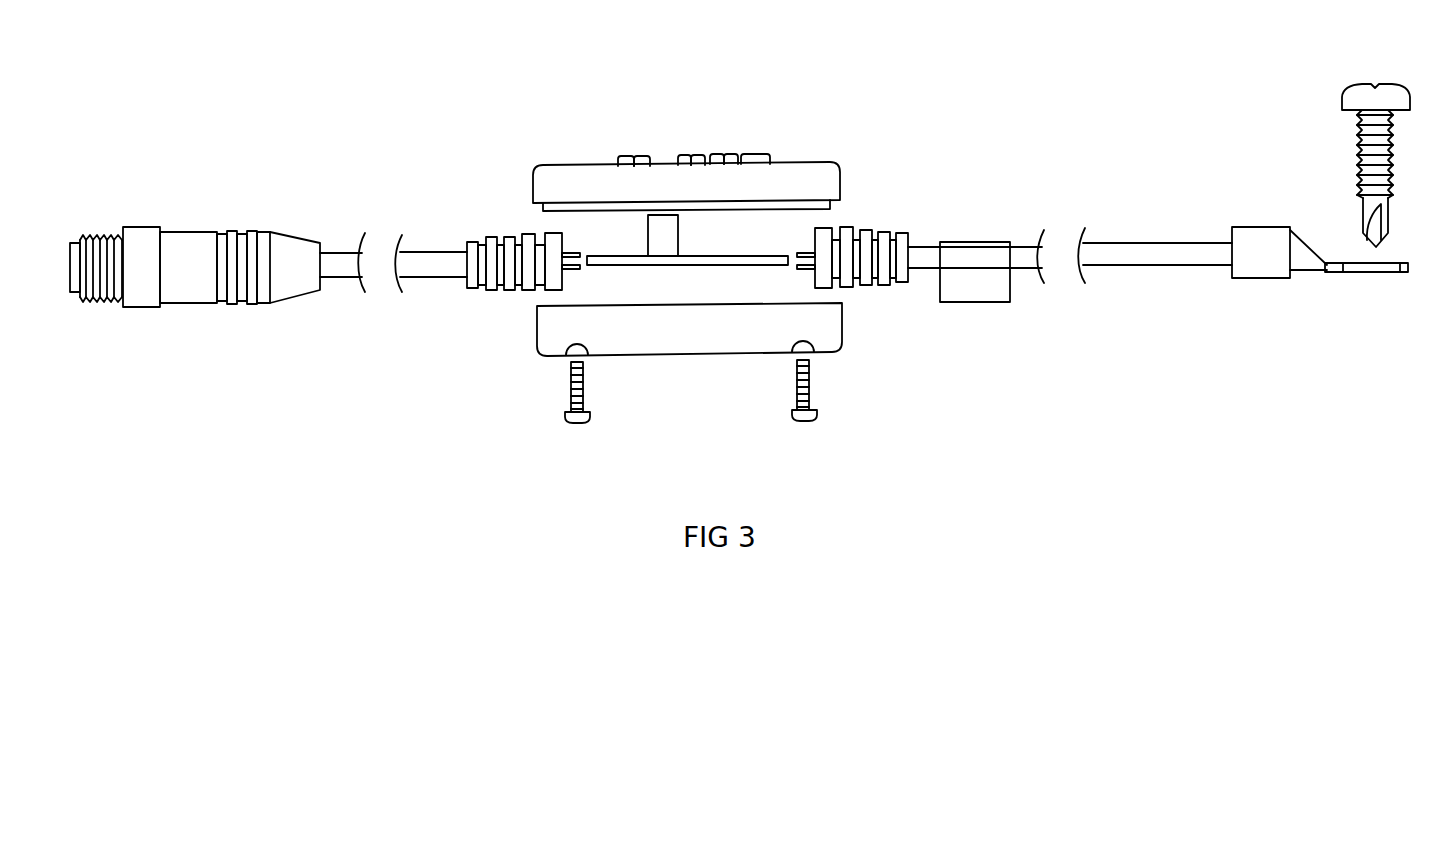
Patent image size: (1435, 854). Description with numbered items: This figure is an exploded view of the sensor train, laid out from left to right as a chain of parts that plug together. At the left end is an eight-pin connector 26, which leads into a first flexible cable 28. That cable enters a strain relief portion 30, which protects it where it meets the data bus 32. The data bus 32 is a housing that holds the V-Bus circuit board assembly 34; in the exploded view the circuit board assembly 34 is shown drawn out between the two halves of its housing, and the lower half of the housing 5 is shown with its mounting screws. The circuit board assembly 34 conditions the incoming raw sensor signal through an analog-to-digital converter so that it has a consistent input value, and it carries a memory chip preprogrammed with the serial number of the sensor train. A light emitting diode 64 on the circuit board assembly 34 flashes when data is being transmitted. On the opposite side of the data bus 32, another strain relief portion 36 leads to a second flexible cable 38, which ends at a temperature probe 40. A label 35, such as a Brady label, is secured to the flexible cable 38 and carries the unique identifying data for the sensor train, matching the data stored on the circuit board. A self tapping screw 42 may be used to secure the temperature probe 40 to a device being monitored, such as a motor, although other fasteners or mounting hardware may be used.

The base housing 5 is at (535, 330).
The 8 pin connector 26 is at (188, 305).
The first flexible cable 28 is at (427, 277).
The strain relief portion 30 is at (490, 238).
The data Bus 32 is at (675, 100).
The V-Bus circuit board assembly 34 is at (780, 253).
The label 35 is at (975, 302).
The strain relief portion 36 is at (882, 232).
The second flexible cable 38 is at (1157, 242).
The temperature probe 40 is at (1310, 270).
The self tapping screw 42 is at (1360, 167).
The light emitting diode 64 is at (678, 231).